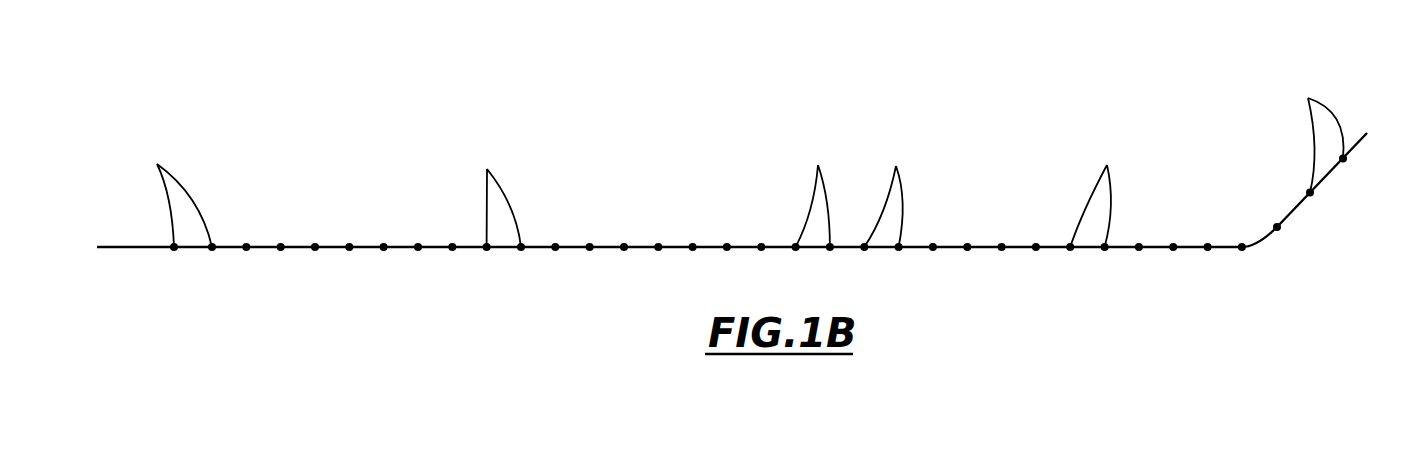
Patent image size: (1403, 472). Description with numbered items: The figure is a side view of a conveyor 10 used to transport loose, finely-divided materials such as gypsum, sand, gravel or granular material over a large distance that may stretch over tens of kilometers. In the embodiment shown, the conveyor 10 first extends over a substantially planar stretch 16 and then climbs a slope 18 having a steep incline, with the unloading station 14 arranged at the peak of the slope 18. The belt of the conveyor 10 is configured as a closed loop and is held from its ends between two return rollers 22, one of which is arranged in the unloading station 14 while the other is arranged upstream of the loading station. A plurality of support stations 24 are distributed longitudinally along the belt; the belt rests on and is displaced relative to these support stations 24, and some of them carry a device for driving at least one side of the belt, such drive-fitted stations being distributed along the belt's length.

The conveyor 10 is at (715, 193).
The unloading station 14 is at (1368, 128).
The planar stretch 16 is at (618, 223).
The slope 18 is at (1253, 178).
The return rollers 22 is at (97, 236).
The support stations 24 is at (737, 160).